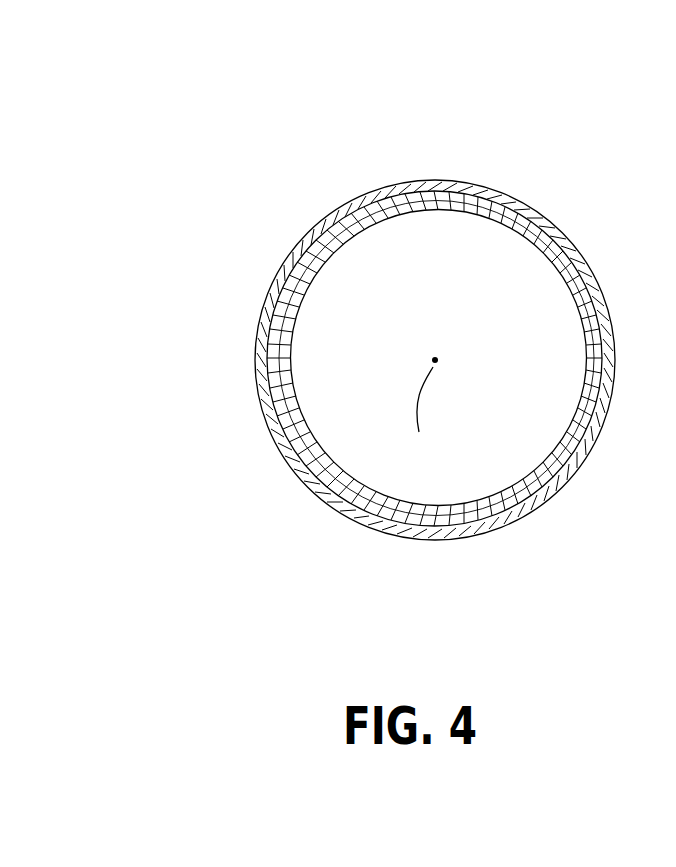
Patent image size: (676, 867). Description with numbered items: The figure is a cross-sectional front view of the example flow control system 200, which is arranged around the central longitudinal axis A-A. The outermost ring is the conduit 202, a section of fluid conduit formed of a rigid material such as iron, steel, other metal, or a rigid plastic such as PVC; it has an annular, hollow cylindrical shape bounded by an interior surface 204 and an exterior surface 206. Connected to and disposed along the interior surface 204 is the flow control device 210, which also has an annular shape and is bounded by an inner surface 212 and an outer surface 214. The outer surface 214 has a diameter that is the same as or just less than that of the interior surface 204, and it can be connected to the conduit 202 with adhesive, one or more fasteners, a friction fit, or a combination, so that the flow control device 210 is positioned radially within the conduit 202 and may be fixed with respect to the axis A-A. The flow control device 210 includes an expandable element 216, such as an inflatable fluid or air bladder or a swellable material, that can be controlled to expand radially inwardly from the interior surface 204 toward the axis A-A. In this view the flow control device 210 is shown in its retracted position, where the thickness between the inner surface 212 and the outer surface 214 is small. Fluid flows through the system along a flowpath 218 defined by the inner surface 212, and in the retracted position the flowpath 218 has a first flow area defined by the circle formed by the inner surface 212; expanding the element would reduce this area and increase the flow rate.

The flow control system 200 is at (396, 272).
The conduit 202 is at (396, 334).
The interior surface 204 is at (434, 358).
The exterior surface 206 is at (471, 170).
The flow control device 210 is at (345, 383).
The inner surface 212 is at (302, 325).
The outer surface 214 is at (246, 321).
The expandable element 216 is at (263, 312).
The flowpath 218 is at (553, 391).